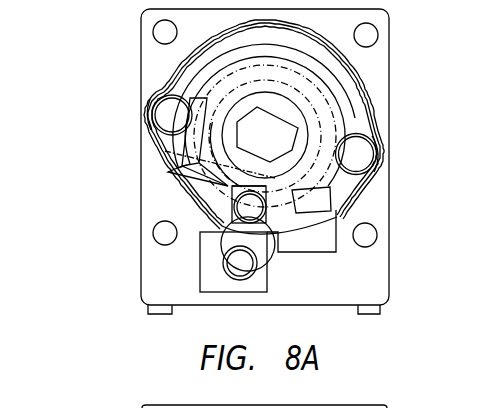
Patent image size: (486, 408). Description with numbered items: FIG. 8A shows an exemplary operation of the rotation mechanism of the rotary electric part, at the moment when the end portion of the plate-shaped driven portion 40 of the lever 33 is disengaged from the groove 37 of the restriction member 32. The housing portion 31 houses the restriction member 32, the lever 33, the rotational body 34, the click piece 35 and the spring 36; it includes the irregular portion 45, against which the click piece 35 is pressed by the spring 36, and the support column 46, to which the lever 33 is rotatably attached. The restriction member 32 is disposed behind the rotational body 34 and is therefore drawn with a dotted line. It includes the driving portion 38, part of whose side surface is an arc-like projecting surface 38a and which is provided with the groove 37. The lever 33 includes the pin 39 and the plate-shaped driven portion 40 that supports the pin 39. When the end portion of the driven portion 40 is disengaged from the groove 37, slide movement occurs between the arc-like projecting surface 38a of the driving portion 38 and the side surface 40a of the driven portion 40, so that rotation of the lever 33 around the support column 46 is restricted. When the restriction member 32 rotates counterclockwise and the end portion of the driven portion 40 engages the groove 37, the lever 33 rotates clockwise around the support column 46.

The housing portion 31 is at (378, 36).
The restriction member 32 is at (378, 129).
The lever 33 is at (224, 265).
The rotational body 34 is at (165, 151).
The click piece 35 is at (160, 117).
The spring 36 is at (320, 62).
The groove 37 is at (275, 182).
The driving portion 38 is at (320, 92).
The arc-like projecting surface 38a is at (232, 185).
The pin 39 is at (245, 206).
The driven portion 40 is at (215, 238).
The side surface 40a is at (228, 228).
The irregular portion 45 is at (152, 162).
The support column 46 is at (240, 263).